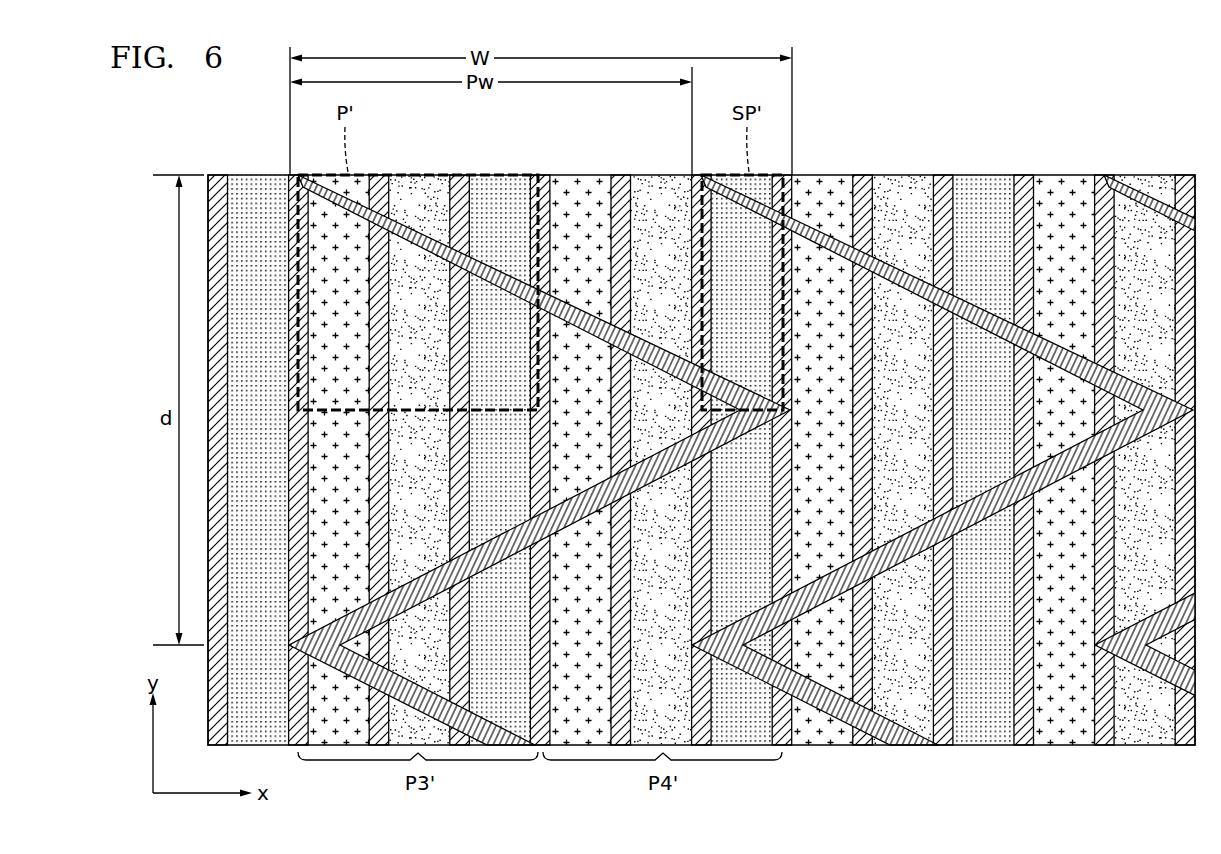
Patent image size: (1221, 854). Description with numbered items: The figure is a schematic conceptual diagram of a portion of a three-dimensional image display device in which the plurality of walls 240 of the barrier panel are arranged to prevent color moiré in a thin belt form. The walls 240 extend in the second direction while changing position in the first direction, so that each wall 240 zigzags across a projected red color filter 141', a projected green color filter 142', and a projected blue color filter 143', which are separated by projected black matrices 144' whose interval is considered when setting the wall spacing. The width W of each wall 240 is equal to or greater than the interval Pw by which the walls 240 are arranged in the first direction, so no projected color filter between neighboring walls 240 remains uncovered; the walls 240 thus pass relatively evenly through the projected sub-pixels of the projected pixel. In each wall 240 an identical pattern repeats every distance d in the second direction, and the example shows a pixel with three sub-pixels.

The wall 240 is at (427, 213).
The projected red color filter 141' is at (983, 423).
The projected green color filter 142' is at (1062, 423).
The projected blue color filter 143' is at (1144, 423).
The projected black matrix 144' is at (1190, 423).